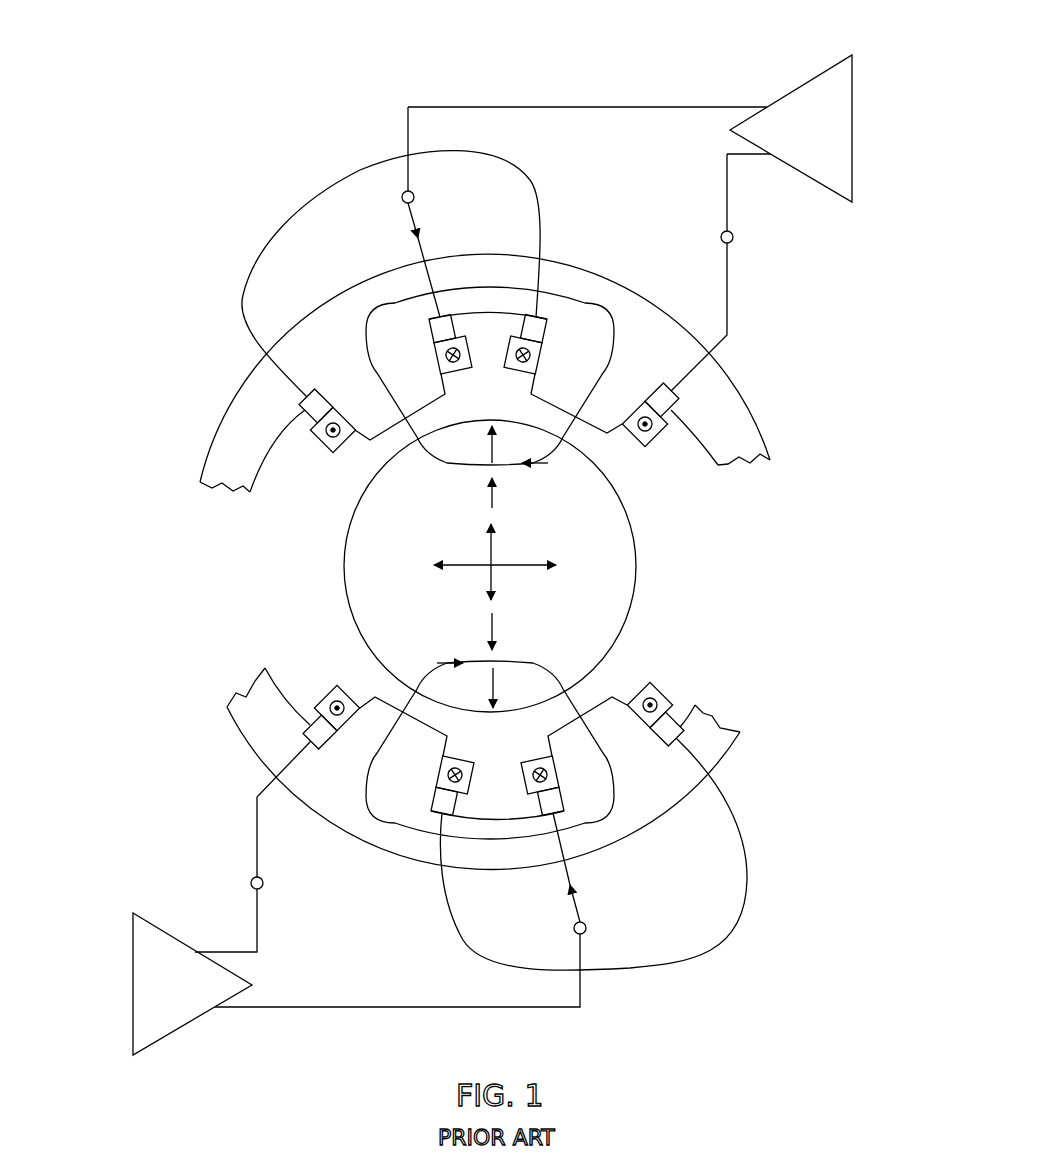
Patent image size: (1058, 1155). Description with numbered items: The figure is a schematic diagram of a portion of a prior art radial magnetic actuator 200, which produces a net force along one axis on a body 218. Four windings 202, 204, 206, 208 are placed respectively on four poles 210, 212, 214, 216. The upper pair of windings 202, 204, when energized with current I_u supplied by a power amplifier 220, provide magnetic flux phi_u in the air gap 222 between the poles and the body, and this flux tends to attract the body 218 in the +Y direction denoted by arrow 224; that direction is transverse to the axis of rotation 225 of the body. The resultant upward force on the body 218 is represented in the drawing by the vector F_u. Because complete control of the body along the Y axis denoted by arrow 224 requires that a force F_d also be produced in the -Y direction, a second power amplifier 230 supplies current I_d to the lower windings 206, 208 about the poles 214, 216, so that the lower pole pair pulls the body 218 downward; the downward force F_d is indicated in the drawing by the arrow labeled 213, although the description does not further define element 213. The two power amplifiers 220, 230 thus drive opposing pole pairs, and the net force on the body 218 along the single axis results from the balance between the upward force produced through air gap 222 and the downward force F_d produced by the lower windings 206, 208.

The prior art actuator 200 is at (493, 51).
The winding 202 is at (320, 442).
The winding 204 is at (648, 442).
The winding 206 is at (322, 691).
The winding 208 is at (659, 689).
The pole 210 is at (373, 393).
The pole 212 is at (640, 393).
The downward force Fd 213 is at (490, 693).
The pole 214 is at (376, 754).
The pole 216 is at (642, 754).
The body 218 is at (341, 577).
The power amplifier 220 is at (855, 126).
The air gap 222 is at (374, 453).
The arrow 224 is at (489, 447).
The axis of rotation 225 is at (496, 565).
The power amplifier 230 is at (131, 998).